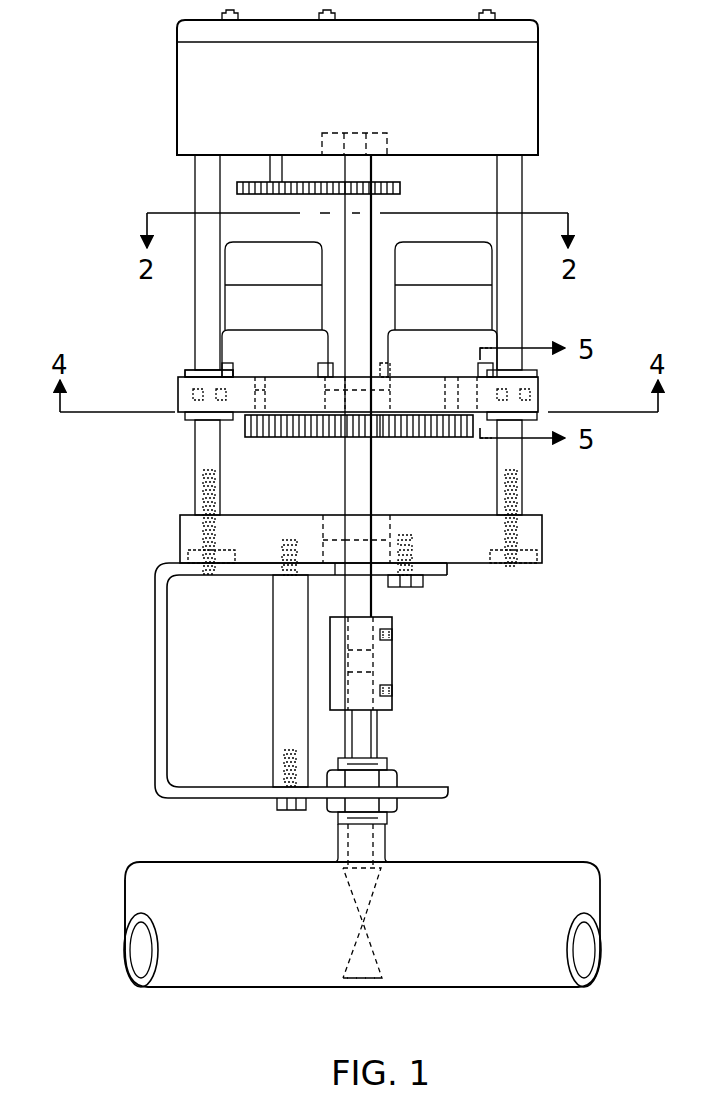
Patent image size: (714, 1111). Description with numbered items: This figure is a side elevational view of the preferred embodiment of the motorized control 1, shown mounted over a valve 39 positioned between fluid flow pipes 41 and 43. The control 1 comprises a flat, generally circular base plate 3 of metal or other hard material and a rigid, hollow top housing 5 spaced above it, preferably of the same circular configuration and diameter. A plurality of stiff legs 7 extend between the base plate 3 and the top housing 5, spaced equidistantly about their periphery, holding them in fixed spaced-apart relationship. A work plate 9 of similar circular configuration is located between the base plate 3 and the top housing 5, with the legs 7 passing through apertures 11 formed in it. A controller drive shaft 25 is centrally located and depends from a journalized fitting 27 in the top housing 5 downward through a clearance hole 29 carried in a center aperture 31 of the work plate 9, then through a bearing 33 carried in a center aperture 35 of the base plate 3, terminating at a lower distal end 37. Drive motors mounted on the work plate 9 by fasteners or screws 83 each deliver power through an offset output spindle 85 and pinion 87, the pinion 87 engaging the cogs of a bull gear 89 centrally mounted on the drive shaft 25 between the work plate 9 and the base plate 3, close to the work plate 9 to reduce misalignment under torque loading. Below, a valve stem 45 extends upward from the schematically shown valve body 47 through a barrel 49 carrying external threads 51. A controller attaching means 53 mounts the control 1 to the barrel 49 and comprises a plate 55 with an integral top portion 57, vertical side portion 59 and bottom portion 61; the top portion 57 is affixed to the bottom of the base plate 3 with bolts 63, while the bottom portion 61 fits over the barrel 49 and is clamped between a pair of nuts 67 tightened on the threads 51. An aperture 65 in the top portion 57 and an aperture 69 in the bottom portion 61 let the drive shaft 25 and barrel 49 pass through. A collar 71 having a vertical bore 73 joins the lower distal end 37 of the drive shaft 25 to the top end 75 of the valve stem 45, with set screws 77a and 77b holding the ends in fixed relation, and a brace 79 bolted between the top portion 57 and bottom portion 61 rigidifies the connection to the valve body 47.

The motorized control 1 is at (158, 78).
The base plate 3 is at (185, 535).
The top housing 5 is at (178, 113).
The legs 7 is at (196, 185).
The work plate 9 is at (183, 395).
The apertures 11 is at (193, 372).
The controller drive shaft 25 is at (372, 598).
The journalized fitting 27 is at (387, 143).
The clearance hole 29 is at (383, 388).
The center aperture 31 is at (390, 390).
The bearing 33 is at (385, 537).
The center aperture 35 is at (330, 527).
The lower distal end 37 is at (350, 636).
The valve 39 is at (367, 987).
The fluid flow pipe 41 is at (147, 870).
The fluid flow pipe 43 is at (546, 870).
The valve stem 45 is at (372, 735).
The valve body 47 is at (357, 900).
The barrel 49 is at (385, 852).
The threads 51 is at (390, 815).
The controller attaching means 53 is at (230, 696).
The plate 55 is at (155, 580).
The top portion 57 is at (437, 570).
The vertical side portion 59 is at (163, 703).
The bottom portion 61 is at (215, 790).
The bolts 63 is at (410, 587).
The aperture 65 is at (333, 565).
The nuts 67 is at (390, 774).
The aperture 69 is at (338, 790).
The collar 71 is at (330, 695).
The vertical bore 73 is at (356, 660).
The top end 75 is at (350, 692).
The set screw 77a is at (393, 635).
The set screw 77b is at (393, 690).
The brace 79 is at (282, 740).
The fasteners or screws 83 is at (322, 370).
The offset output spindle 85 is at (266, 392).
The pinion 87 is at (265, 430).
The bull gear 89 is at (388, 430).